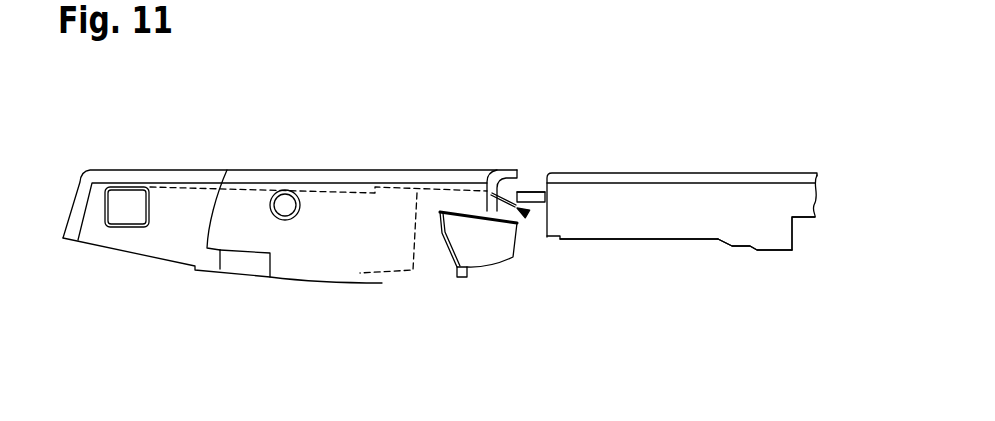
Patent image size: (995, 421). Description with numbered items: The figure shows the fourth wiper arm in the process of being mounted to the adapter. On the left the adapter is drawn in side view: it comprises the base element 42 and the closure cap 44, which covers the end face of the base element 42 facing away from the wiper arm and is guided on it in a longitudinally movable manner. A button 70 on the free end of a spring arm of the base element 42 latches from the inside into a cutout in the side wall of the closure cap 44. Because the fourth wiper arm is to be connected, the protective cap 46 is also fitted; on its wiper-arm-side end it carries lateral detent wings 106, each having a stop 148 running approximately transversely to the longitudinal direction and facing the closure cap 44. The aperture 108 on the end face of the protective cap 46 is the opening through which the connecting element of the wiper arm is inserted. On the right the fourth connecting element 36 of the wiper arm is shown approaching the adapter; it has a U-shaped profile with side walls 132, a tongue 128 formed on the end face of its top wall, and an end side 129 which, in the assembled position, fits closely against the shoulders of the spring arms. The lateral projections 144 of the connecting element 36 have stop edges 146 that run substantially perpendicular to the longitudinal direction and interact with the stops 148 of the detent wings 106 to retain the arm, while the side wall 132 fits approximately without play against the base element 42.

The fourth connecting element 36 is at (750, 146).
The base element 42 is at (280, 295).
The closure cap 44 is at (113, 152).
The protective cap 46 is at (286, 150).
The button 70 is at (121, 214).
The detent wing 106 is at (467, 238).
The aperture 108 is at (526, 214).
The tongue 128 is at (525, 192).
The end side 129 is at (530, 192).
The side wall 132 is at (688, 223).
The lateral projection 144 is at (775, 236).
The stop edge 146 is at (793, 235).
The stop 148 is at (432, 225).